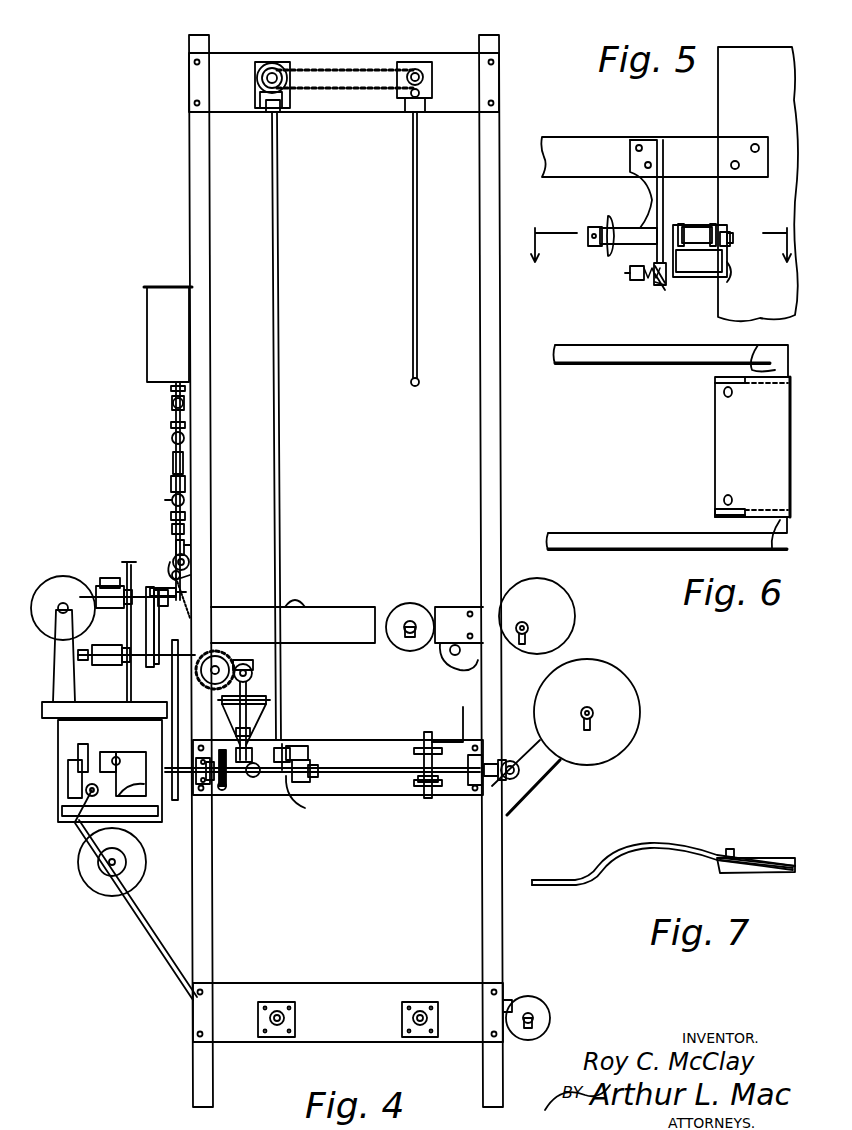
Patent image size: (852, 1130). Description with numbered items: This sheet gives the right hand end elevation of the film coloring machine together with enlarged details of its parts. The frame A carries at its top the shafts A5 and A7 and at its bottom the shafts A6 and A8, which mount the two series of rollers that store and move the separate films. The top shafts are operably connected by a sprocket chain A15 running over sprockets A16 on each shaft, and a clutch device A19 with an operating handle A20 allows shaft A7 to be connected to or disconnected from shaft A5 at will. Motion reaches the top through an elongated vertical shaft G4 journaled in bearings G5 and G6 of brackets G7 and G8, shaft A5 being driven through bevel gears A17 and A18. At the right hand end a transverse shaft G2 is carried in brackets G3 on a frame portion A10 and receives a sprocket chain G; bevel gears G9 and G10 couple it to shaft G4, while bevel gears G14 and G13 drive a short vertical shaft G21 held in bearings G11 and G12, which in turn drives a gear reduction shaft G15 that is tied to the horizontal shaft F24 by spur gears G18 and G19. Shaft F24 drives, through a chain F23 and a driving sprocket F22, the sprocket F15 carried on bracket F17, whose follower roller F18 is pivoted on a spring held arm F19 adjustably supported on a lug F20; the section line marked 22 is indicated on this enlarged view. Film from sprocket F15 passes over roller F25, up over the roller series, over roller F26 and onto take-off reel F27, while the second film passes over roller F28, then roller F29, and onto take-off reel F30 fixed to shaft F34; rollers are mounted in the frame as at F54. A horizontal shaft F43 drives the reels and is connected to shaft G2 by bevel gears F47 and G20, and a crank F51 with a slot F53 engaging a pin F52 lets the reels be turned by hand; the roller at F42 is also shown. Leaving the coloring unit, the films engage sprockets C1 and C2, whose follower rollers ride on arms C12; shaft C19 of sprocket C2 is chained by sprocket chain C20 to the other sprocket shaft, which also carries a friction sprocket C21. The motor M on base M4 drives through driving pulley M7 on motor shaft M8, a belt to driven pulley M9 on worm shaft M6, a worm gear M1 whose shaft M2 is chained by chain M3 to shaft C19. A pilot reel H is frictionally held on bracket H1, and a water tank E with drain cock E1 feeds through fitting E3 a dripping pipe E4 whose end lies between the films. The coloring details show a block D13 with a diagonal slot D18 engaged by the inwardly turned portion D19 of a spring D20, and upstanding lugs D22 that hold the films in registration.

In FIG. 4, the frame A is at (482, 492).
In FIG. 5, the frame A is at (726, 110).
In FIG. 4, the shaft A5 is at (280, 68).
In FIG. 4, the shaft A6 is at (280, 1005).
In FIG. 4, the shaft A7 is at (417, 68).
In FIG. 4, the shaft A8 is at (421, 1005).
In FIG. 4, the frame portion A10 is at (372, 796).
In FIG. 4, the sprocket chain A15 is at (338, 68).
In FIG. 4, the sprocket A16 is at (408, 78).
In FIG. 4, the bevel gear A17 is at (264, 70).
In FIG. 4, the bevel gear A18 is at (285, 78).
In FIG. 4, the clutch device A19 is at (428, 90).
In FIG. 4, the operating handle A20 is at (418, 190).
In FIG. 4, the elongated vertical shaft G4 is at (280, 519).
In FIG. 4, the bearing G5 is at (282, 102).
In FIG. 4, the bracket G7 is at (260, 83).
In FIG. 4, the water tank E is at (160, 340).
In FIG. 4, the drain cock E1 is at (172, 402).
In FIG. 4, the fitting E3 is at (172, 473).
In FIG. 4, the dripping pipe E4 is at (172, 530).
In FIG. 4, the sprocket F15 is at (188, 558).
In FIG. 5, the sprocket F15 is at (690, 226).
In FIG. 4, the bracket F17 is at (186, 543).
In FIG. 5, the bracket F17 is at (650, 200).
In FIG. 4, the follower roller F18 is at (188, 575).
In FIG. 5, the follower roller F18 is at (708, 228).
In FIG. 5, the spring held arm F19 is at (720, 260).
In FIG. 5, the lug F20 is at (660, 285).
In FIG. 5, the driving sprocket F22 is at (608, 252).
In FIG. 4, the chain F23 is at (187, 592).
In FIG. 4, the horizontal shaft F24 is at (215, 670).
In FIG. 4, the roller F25 is at (450, 655).
In FIG. 4, the roller F26 is at (411, 620).
In FIG. 4, the take-off reel F27 is at (560, 605).
In FIG. 4, the roller F28 is at (306, 605).
In FIG. 4, the roller F29 is at (536, 1008).
In FIG. 4, the take-off reel F30 is at (592, 660).
In FIG. 4, the shaft F34 is at (592, 708).
In FIG. 4, the wheel hub F42 is at (526, 624).
In FIG. 4, the horizontal shaft F43 is at (512, 775).
In FIG. 4, the bevel gear F47 is at (505, 778).
In FIG. 4, the crank F51 is at (427, 732).
In FIG. 4, the pin F52 is at (518, 765).
In FIG. 4, the slot F53 is at (420, 782).
In FIG. 4, the roller mounting F54 is at (510, 1000).
In FIG. 4, the sprocket C1 is at (96, 585).
In FIG. 4, the sprocket C2 is at (102, 665).
In FIG. 4, the arm C12 is at (106, 578).
In FIG. 4, the shaft C19 is at (171, 666).
In FIG. 4, the sprocket chain C20 is at (190, 620).
In FIG. 4, the sprocket C21 is at (150, 585).
In FIG. 4, the reel H is at (55, 597).
In FIG. 4, the bracket H1 is at (58, 659).
In FIG. 4, the motor M is at (92, 874).
In FIG. 4, the worm gear M1 is at (84, 760).
In FIG. 4, the shaft M2 is at (112, 758).
In FIG. 4, the chain M3 is at (127, 690).
In FIG. 4, the base M4 is at (140, 816).
In FIG. 4, the worm shaft M6 is at (90, 794).
In FIG. 4, the driving pulley M7 is at (68, 776).
In FIG. 4, the motor shaft M8 is at (78, 826).
In FIG. 4, the driven pulley M9 is at (127, 774).
In FIG. 4, the sprocket chain G is at (228, 784).
In FIG. 4, the shaft G2 is at (392, 768).
In FIG. 4, the bracket G3 is at (206, 785).
In FIG. 4, the bearing G6 is at (300, 748).
In FIG. 4, the bracket G8 is at (310, 770).
In FIG. 4, the bevel gear G9 is at (300, 808).
In FIG. 4, the bevel gear G10 is at (278, 780).
In FIG. 4, the bearing G11 is at (268, 698).
In FIG. 4, the bearing G12 is at (284, 746).
In FIG. 4, the bevel gear G13 is at (238, 750).
In FIG. 4, the bevel gear G14 is at (250, 795).
In FIG. 4, the gear reduction shaft G15 is at (252, 673).
In FIG. 4, the spur gear G18 is at (253, 662).
In FIG. 4, the spur gear G19 is at (206, 660).
In FIG. 4, the bevel gear G20 is at (518, 792).
In FIG. 4, the short vertical shaft G21 is at (250, 728).
In FIG. 5, the section line 22 is at (651, 261).
In FIG. 6, the block D13 is at (716, 444).
In FIG. 7, the block D13 is at (750, 874).
In FIG. 6, the diagonal slot D18 is at (714, 514).
In FIG. 7, the diagonal slot D18 is at (772, 848).
In FIG. 6, the inwardly turned portion D19 is at (758, 345).
In FIG. 7, the inwardly turned portion D19 is at (655, 848).
In FIG. 6, the spring D20 is at (620, 343).
In FIG. 6, the lug D22 is at (723, 393).
In FIG. 7, the lug D22 is at (727, 849).